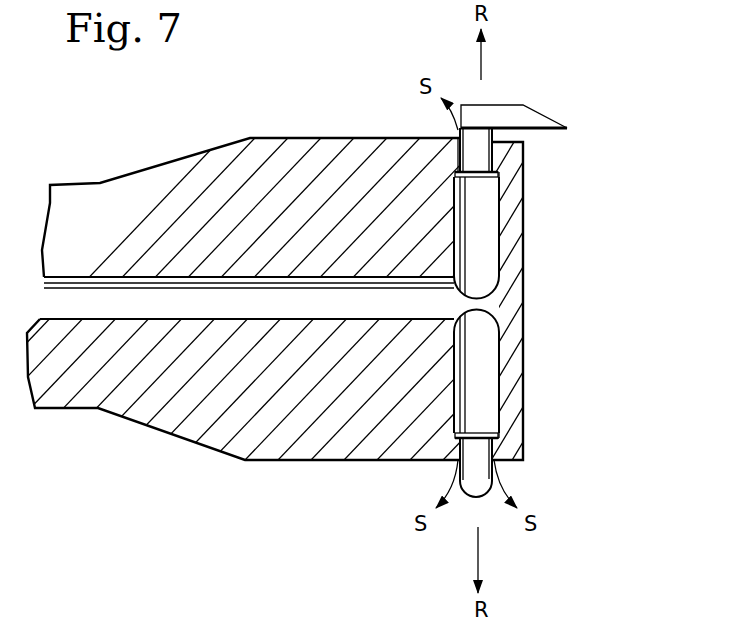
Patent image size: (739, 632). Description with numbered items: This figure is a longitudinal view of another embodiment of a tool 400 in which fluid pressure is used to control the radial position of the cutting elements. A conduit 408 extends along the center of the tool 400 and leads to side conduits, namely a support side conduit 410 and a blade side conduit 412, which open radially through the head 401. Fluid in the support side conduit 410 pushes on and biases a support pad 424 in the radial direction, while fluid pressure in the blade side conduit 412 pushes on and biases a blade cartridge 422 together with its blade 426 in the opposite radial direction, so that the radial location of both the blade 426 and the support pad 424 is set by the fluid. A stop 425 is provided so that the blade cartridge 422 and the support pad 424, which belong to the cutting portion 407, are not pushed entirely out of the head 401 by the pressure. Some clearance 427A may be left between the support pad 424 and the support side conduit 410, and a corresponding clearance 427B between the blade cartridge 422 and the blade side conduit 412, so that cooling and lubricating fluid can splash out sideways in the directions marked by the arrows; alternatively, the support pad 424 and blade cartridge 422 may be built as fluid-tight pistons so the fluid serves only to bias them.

The tool 400 is at (620, 160).
The head 401 is at (83, 158).
The cutting portion 407 is at (217, 491).
The conduit 408 is at (122, 320).
The support side conduit 410 is at (498, 370).
The blade side conduit 412 is at (498, 237).
The blade cartridge 422 is at (480, 168).
The support pad 424 is at (480, 497).
The stop 425 is at (458, 158).
The blade 426 is at (544, 123).
The clearance 427A is at (520, 437).
The clearance 427B is at (460, 148).